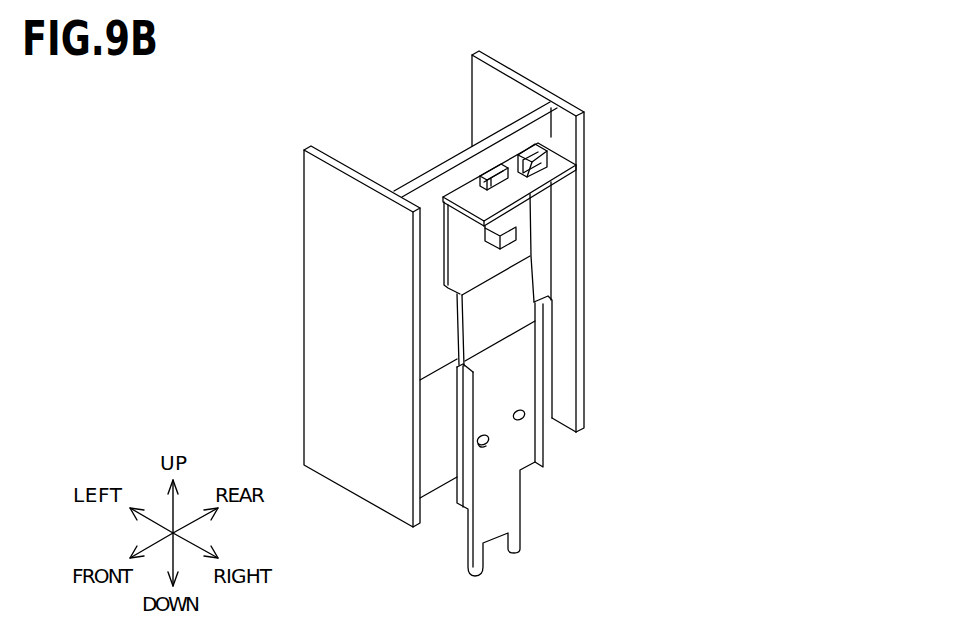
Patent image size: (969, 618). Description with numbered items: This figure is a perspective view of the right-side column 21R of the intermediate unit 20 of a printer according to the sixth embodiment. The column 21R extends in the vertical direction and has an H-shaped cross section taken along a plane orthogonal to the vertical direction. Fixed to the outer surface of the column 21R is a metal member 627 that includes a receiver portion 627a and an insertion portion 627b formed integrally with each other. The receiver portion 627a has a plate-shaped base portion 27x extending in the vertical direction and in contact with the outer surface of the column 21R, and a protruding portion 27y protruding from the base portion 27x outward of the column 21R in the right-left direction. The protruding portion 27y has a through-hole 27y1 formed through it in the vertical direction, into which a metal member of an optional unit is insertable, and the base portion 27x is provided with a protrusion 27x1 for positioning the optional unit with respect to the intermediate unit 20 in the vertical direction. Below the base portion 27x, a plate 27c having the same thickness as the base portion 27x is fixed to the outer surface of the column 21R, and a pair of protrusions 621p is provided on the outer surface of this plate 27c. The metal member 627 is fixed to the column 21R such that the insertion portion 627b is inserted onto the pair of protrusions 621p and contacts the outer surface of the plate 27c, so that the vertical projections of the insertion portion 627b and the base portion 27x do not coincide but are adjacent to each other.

The intermediate unit 20 is at (762, 165).
The column 21R is at (585, 318).
The plate 27c is at (553, 357).
The base portion 27x is at (535, 212).
The protrusion 27x1 is at (517, 242).
The protruding portion 27y is at (557, 163).
The through-hole 27y1 is at (548, 142).
The protrusions 621p is at (524, 415).
The metal member 627 is at (172, 235).
The receiver portion 627a is at (447, 264).
The insertion portion 627b is at (458, 436).